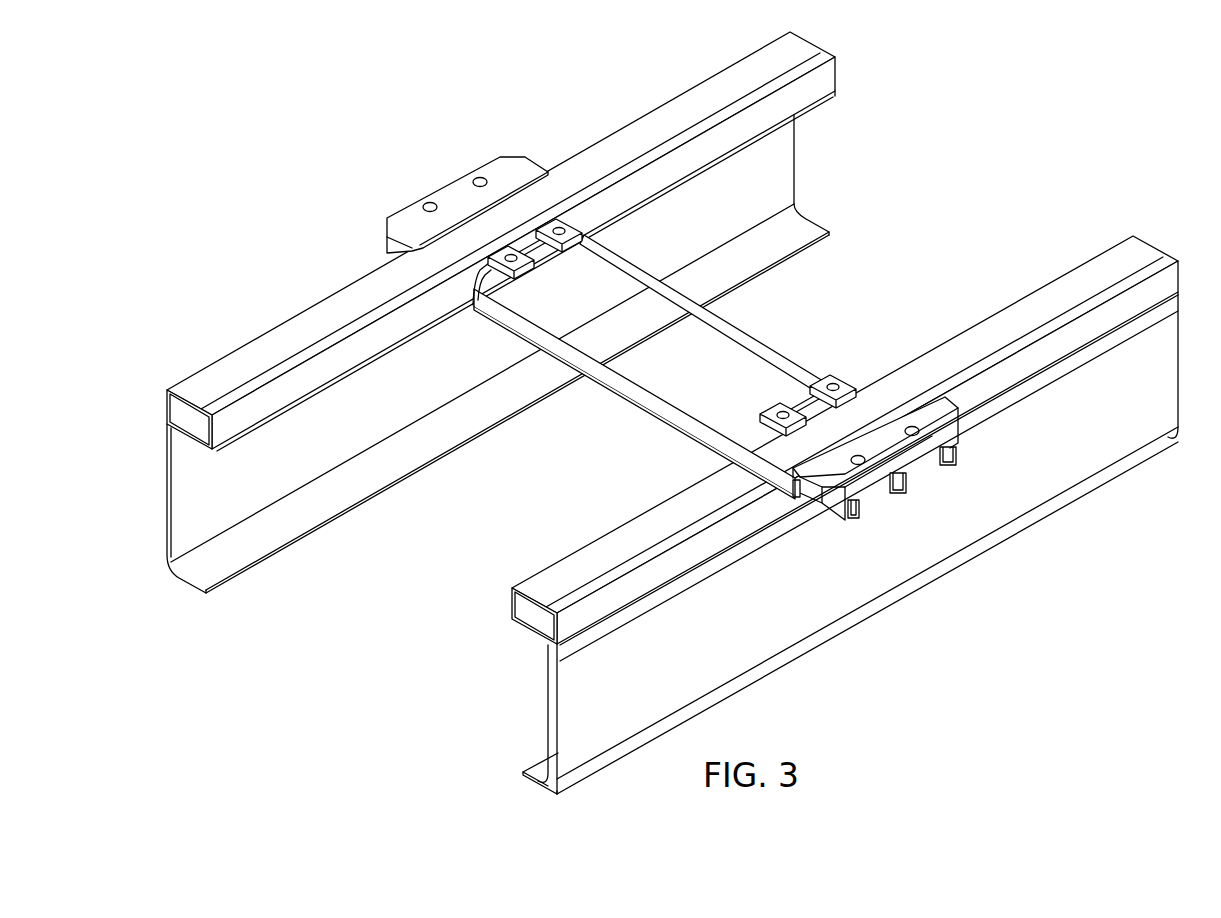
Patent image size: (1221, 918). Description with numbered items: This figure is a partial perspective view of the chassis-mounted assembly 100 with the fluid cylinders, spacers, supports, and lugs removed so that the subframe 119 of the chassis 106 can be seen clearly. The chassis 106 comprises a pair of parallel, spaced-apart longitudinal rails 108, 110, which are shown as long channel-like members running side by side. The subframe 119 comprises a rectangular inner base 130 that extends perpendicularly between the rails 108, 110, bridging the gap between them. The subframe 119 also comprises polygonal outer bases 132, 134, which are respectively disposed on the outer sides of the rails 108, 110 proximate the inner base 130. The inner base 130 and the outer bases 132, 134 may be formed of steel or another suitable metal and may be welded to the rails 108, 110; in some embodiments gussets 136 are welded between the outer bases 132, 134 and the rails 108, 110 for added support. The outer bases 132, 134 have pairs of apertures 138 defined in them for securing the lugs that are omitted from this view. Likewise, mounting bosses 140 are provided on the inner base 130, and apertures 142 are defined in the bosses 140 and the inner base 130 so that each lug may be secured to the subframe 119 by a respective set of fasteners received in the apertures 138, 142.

The chassis-mounted assembly 100 is at (671, 413).
The chassis 106 is at (672, 413).
The longitudinal rail 108 is at (238, 348).
The longitudinal rail 110 is at (537, 572).
The subframe 119 is at (443, 164).
The inner base 130 is at (632, 400).
The outer base 132 is at (440, 186).
The outer base 134 is at (957, 428).
The gussets 136 is at (851, 518).
The apertures 138 is at (478, 180).
The mounting bosses 140 is at (547, 217).
The apertures 142 is at (531, 268).